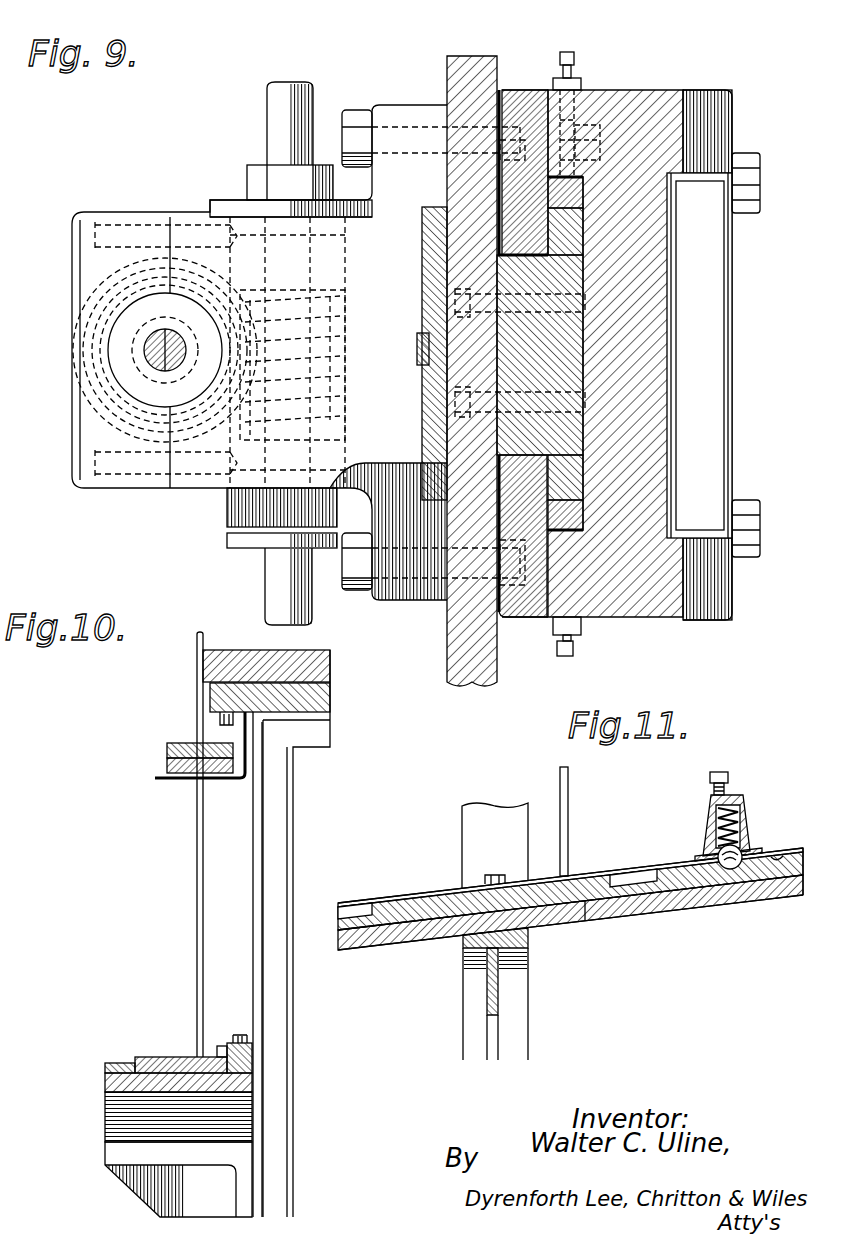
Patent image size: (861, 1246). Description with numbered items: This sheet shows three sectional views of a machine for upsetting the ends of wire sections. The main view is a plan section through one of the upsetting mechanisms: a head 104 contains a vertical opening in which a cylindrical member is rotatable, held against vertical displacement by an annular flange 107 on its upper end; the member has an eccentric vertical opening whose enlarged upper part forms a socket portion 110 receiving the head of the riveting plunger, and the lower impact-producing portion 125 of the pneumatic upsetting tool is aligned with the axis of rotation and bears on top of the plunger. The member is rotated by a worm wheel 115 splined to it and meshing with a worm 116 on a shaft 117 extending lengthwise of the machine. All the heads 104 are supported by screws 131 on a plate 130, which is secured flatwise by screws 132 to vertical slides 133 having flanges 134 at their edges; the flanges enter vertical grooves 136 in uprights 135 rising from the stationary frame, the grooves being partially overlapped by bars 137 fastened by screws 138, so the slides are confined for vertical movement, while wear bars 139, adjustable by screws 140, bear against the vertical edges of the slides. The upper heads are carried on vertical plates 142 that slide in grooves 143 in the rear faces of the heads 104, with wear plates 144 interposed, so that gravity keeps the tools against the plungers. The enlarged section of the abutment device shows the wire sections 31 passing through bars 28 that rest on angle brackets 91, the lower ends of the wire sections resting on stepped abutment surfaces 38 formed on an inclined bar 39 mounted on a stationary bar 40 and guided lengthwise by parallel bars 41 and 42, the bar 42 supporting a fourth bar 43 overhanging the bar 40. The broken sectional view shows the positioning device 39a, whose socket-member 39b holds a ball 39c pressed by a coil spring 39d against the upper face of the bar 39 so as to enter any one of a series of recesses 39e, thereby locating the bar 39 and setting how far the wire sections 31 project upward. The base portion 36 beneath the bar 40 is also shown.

In FIG. 9, the head 104 is at (197, 255).
In FIG. 9, the annular flange 107 is at (140, 388).
In FIG. 9, the socket portion 110 is at (150, 350).
In FIG. 9, the worm wheel 115 is at (98, 430).
In FIG. 9, the worm 116 is at (318, 295).
In FIG. 9, the shaft 117 is at (276, 100).
In FIG. 9, the impact-producing portion 125 is at (148, 366).
In FIG. 9, the plate 130 is at (480, 678).
In FIG. 9, the screws 131 is at (355, 112).
In FIG. 9, the screws 132 is at (455, 303).
In FIG. 9, the vertical slides 133 is at (567, 305).
In FIG. 9, the flanges 134 is at (570, 245).
In FIG. 9, the uprights 135 is at (650, 428).
In FIG. 9, the vertical grooves 136 is at (585, 340).
In FIG. 9, the bars 137 is at (515, 100).
In FIG. 9, the screws 138 is at (620, 93).
In FIG. 9, the wear bars 139 is at (578, 198).
In FIG. 9, the screws 140 is at (575, 62).
In FIG. 9, the vertical plates 142 is at (428, 208).
In FIG. 9, the grooves 143 is at (410, 505).
In FIG. 9, the wear plates 144 is at (418, 352).
In FIG. 10, the bars 28 is at (167, 765).
In FIG. 10, the wire sections 31 is at (197, 866).
In FIG. 11, the wire sections 31 is at (568, 828).
In FIG. 10, the base 36 is at (115, 1158).
In FIG. 11, the abutment surfaces 38 is at (360, 912).
In FIG. 11, the bar 39 is at (586, 925).
In FIG. 11, the positioning device 39a is at (750, 812).
In FIG. 11, the socket-member 39b is at (748, 832).
In FIG. 11, the ball 39c is at (730, 870).
In FIG. 11, the coil spring 39d is at (745, 815).
In FIG. 11, the recesses 39e is at (778, 862).
In FIG. 10, the stationary bar 40 is at (107, 1090).
In FIG. 11, the stationary bar 40 is at (430, 945).
In FIG. 10, the bar 41 is at (115, 1062).
In FIG. 10, the bar 42 is at (250, 1058).
In FIG. 10, the fourth bar 43 is at (222, 1046).
In FIG. 11, the fourth bar 43 is at (420, 897).
In FIG. 10, the angle brackets 91 is at (180, 782).